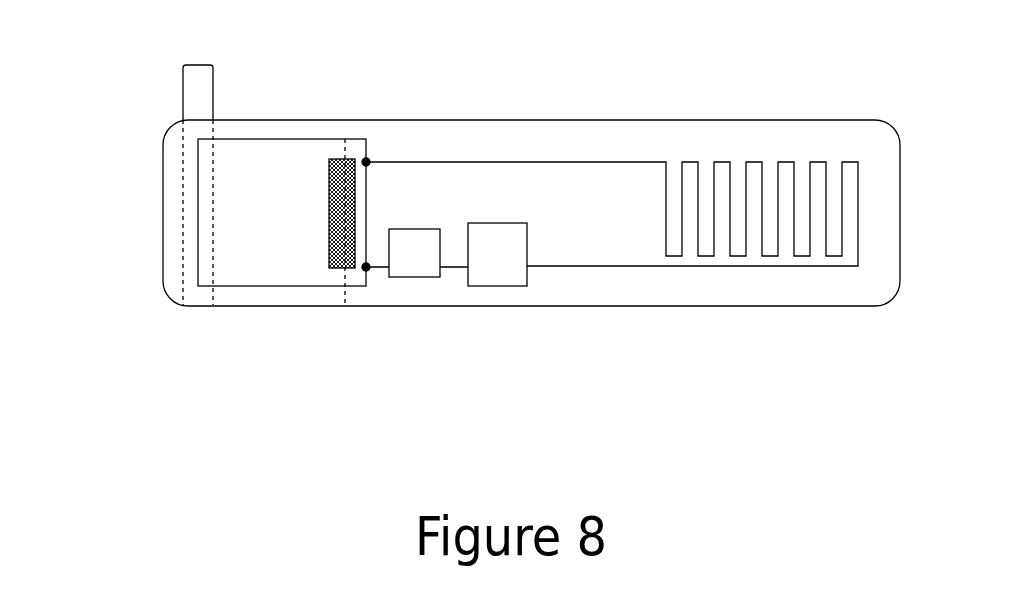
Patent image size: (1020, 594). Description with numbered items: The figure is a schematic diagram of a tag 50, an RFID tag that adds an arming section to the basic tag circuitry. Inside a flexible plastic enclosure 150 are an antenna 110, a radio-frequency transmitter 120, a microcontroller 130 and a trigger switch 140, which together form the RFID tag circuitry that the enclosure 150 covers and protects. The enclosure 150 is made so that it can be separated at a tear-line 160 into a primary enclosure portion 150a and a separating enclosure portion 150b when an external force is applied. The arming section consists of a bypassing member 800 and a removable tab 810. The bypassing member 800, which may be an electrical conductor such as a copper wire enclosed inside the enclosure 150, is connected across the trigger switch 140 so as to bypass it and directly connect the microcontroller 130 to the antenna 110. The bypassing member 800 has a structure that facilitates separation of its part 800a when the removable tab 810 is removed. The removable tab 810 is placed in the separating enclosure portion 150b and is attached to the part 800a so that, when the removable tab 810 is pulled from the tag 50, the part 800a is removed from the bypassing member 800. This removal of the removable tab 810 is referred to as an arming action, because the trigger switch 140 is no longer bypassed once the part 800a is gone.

The tag 50 is at (695, 85).
The antenna 110 is at (852, 160).
The radio-frequency (RF) transmitter 120 is at (498, 287).
The microcontroller 130 is at (428, 279).
The trigger switch 140 is at (357, 183).
The enclosure 150 is at (655, 307).
The primary enclosure portion 150a is at (548, 120).
The separating enclosure portion 150b is at (235, 307).
The tear-line 160 is at (340, 302).
The bypassing member 800 is at (307, 138).
The part of the bypassing member 800a is at (192, 215).
The removable tab 810 is at (214, 73).